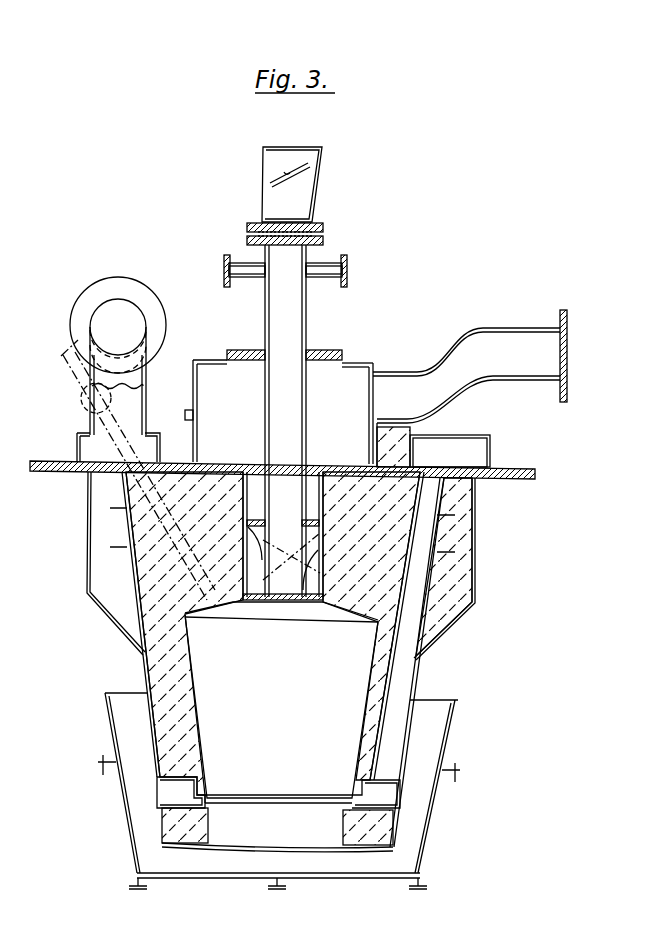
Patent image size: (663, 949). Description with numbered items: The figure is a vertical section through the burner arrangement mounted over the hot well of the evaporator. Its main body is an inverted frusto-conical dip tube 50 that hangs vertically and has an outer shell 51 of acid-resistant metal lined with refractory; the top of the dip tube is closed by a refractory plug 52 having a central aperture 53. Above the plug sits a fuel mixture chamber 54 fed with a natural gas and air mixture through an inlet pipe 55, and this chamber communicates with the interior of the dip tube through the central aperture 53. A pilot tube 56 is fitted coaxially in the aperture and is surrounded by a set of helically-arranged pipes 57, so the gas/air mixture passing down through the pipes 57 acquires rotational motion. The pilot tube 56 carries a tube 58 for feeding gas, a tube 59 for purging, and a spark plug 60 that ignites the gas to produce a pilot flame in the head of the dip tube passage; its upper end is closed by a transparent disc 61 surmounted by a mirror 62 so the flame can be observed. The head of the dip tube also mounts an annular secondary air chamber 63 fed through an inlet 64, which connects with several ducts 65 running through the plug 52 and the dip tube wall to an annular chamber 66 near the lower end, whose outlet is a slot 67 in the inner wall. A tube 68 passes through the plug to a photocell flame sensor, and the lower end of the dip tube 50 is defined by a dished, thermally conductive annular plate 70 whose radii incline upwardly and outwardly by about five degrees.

The dip tube 50 is at (162, 663).
The outer shell 51 is at (416, 680).
The refractory plug 52 is at (357, 593).
The central aperture 53 is at (315, 470).
The fuel mixture chamber 54 is at (350, 378).
The inlet pipe 55 is at (523, 345).
The pilot tube 56 is at (266, 392).
The helically-arranged pipes 57 is at (308, 592).
The gas feed tube 58 is at (253, 263).
The purging tube 59 is at (320, 263).
The spark plug 60 is at (289, 320).
The transparent disc 61 is at (290, 223).
The mirror 62 is at (307, 177).
The annular secondary air chamber 63 is at (462, 437).
The air inlet 64 is at (127, 310).
The ducts 65 is at (415, 662).
The annular chamber 66 is at (172, 792).
The slot 67 is at (185, 812).
The flame sensor tube 68 is at (133, 488).
The annular plate 70 is at (187, 845).